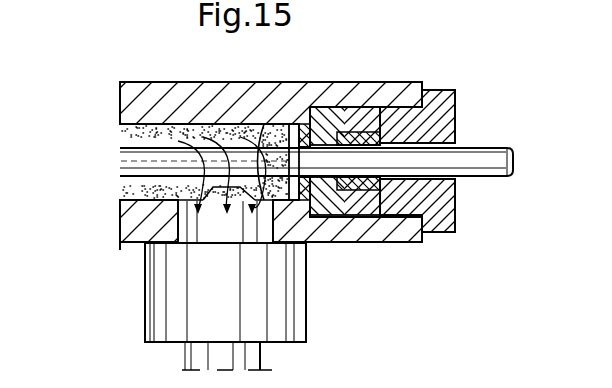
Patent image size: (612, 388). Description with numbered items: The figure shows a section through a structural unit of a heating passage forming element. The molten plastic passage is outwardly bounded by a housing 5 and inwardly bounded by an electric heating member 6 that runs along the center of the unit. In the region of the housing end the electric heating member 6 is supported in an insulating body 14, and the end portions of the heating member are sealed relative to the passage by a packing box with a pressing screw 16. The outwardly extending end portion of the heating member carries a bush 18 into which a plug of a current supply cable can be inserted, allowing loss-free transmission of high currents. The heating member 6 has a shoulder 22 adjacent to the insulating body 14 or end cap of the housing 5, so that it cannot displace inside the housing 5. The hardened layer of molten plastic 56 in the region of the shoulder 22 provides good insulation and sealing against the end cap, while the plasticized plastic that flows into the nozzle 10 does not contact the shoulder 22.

The housing 5 is at (193, 100).
The hardened layer of the molten plastic 56 is at (153, 124).
The shoulder 22 is at (294, 124).
The insulating body 14 is at (333, 117).
The pressing screw 16 is at (442, 100).
The bush 18 is at (478, 156).
The electric heating member 6 is at (131, 161).
The nozzle 10 is at (286, 280).